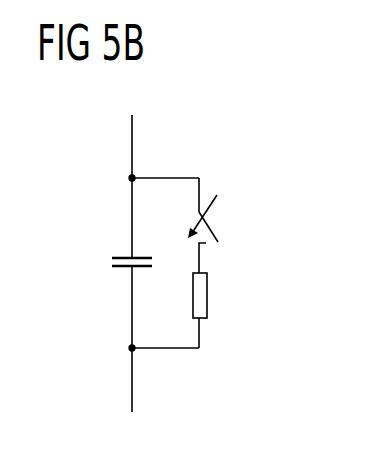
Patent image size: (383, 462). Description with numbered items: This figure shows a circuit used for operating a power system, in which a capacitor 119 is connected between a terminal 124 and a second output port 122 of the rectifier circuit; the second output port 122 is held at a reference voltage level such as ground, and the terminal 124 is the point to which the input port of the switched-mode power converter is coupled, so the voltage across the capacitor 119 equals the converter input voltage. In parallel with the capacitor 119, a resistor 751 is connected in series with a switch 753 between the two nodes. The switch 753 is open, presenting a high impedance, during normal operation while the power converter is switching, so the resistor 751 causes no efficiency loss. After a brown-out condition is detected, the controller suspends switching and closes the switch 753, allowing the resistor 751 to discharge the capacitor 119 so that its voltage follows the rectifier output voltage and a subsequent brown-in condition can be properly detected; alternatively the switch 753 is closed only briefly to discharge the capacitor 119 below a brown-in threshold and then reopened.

The terminal of capacitor 124 is at (128, 178).
The capacitor 119 is at (110, 262).
The second output port 122 is at (128, 347).
The switch 753 is at (213, 224).
The resistor 751 is at (208, 296).